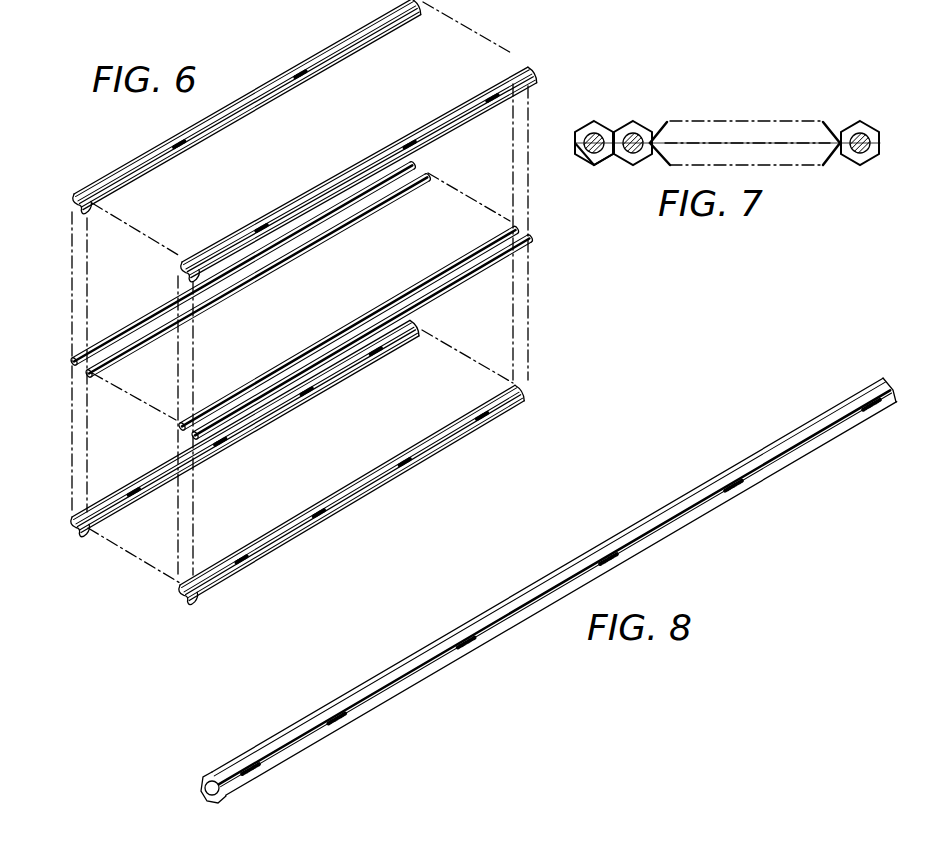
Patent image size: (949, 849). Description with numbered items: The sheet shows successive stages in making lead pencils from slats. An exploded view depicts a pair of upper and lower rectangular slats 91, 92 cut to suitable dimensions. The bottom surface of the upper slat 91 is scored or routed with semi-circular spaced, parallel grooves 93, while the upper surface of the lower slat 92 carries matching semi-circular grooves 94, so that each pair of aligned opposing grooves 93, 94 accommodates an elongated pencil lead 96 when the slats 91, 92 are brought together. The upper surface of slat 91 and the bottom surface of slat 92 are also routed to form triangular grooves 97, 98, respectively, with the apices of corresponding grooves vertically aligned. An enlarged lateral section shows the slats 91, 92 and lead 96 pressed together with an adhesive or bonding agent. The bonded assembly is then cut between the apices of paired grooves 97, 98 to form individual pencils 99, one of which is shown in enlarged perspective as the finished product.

In FIG. 6, the upper slat 91 is at (114, 172).
In FIG. 7, the upper slat 91 is at (737, 123).
In FIG. 6, the lower slat 92 is at (253, 530).
In FIG. 7, the lower slat 92 is at (808, 165).
In FIG. 6, the semi-circular grooves 93 is at (72, 199).
In FIG. 6, the semi-circular grooves 94 is at (72, 516).
In FIG. 6, the pencil lead 96 is at (86, 373).
In FIG. 7, the pencil lead 96 is at (645, 125).
In FIG. 8, the pencil lead 96 is at (203, 787).
In FIG. 7, the triangular grooves 97 is at (606, 126).
In FIG. 7, the triangular grooves 98 is at (603, 168).
In FIG. 8, the pencil 99 is at (384, 707).